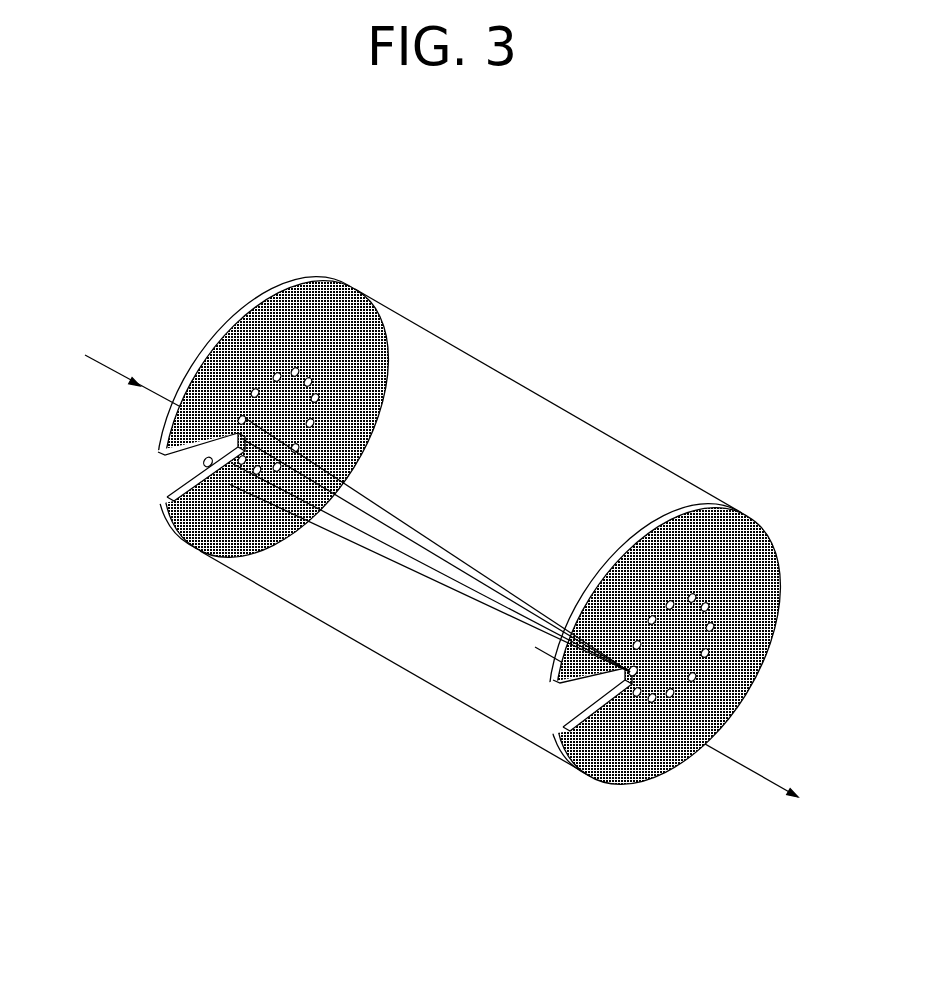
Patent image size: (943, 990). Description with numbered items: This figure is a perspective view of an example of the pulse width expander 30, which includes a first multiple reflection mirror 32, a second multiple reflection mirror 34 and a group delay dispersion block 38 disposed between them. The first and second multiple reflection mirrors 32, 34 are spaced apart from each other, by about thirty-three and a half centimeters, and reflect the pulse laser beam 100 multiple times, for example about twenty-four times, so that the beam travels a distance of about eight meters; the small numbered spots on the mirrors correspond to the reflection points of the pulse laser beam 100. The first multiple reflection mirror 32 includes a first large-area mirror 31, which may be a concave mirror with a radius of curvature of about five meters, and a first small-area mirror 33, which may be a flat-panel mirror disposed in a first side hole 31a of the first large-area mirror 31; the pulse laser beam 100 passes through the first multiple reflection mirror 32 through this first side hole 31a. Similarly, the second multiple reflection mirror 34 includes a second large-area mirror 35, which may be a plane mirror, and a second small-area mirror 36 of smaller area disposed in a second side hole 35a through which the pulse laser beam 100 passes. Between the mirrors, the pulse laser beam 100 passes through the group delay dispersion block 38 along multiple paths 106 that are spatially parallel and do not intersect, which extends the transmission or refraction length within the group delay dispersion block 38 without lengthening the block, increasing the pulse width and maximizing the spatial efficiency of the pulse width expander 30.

The pulse laser beam 100 is at (110, 368).
The pulse width expander 30 is at (663, 372).
The first large-area mirror 31 is at (203, 537).
The first side hole 31a is at (156, 470).
The first multiple reflection mirror 32 is at (130, 613).
The first small-area mirror 33 is at (163, 493).
The second multiple reflection mirror 34 is at (530, 840).
The second large-area mirror 35 is at (598, 767).
The second side hole 35a is at (553, 695).
The second small-area mirror 36 is at (563, 730).
The group delay dispersion block 38 is at (382, 643).
The multiple paths 106 is at (387, 563).